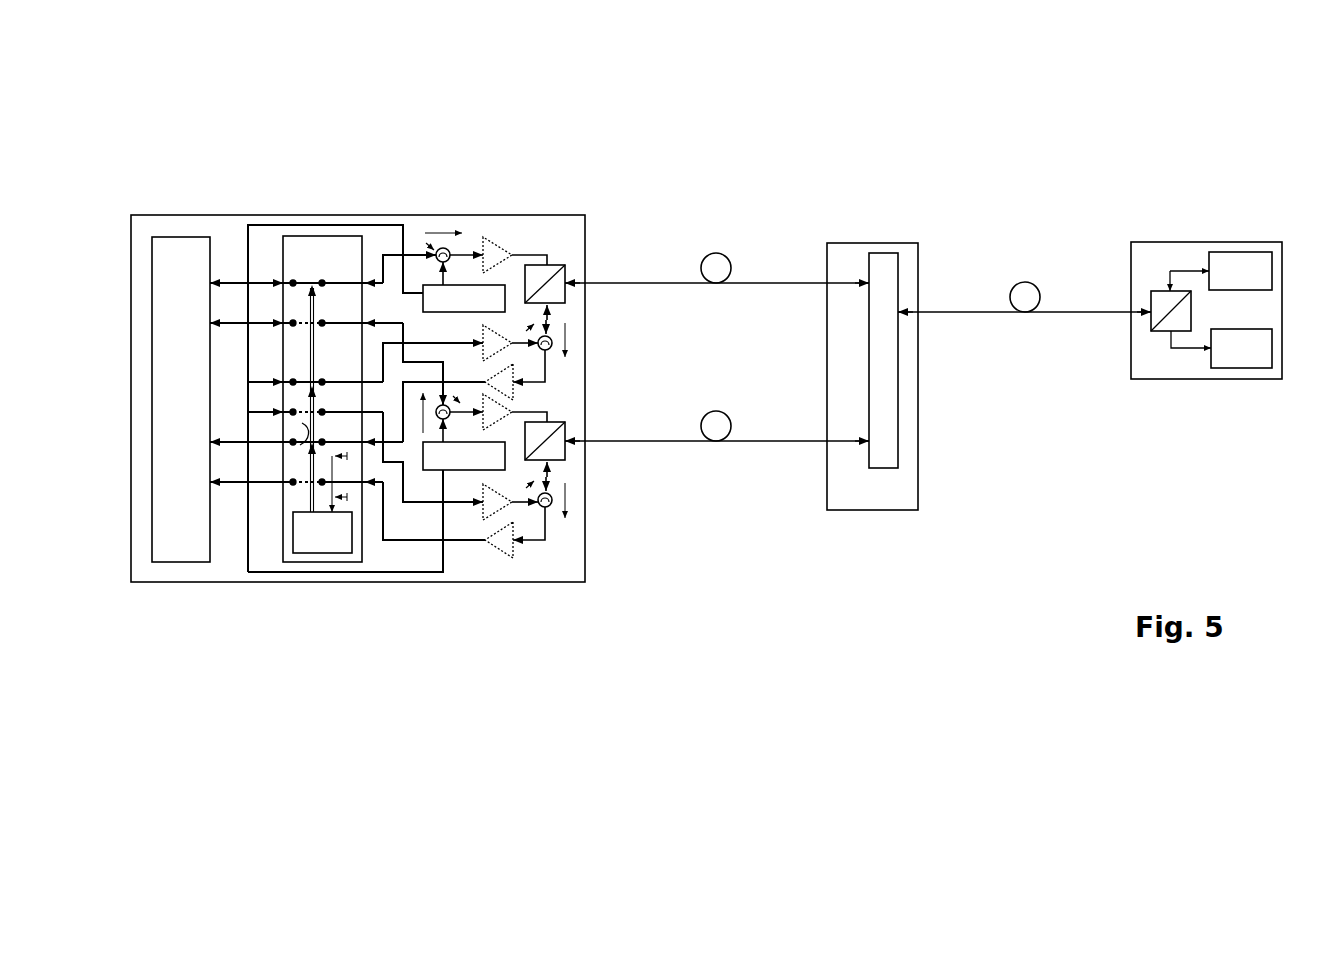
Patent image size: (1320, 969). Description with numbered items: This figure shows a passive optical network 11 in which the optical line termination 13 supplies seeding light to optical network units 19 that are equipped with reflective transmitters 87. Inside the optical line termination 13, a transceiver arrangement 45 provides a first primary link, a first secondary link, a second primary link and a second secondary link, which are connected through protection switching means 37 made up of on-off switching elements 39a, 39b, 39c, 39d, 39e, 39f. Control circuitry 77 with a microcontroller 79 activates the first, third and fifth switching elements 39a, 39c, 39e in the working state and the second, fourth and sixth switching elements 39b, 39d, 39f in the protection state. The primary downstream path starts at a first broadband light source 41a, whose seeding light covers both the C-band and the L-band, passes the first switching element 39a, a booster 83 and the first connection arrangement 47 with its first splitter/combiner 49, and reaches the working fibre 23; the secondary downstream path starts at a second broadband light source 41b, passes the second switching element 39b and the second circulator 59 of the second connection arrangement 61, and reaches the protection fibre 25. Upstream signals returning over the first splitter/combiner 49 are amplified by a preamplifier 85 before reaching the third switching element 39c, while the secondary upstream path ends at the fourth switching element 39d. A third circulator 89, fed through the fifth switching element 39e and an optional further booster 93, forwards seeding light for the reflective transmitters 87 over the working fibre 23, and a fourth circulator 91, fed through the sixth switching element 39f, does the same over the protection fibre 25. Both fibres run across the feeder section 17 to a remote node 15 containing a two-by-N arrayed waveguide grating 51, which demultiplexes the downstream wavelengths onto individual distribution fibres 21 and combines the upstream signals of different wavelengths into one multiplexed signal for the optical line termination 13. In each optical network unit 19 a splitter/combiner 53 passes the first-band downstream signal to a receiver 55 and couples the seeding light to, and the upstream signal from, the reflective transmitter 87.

The passive optical network 11 is at (176, 81).
The optical line termination 13 is at (210, 214).
The remote node (RN) 15 is at (887, 505).
The feeder optical link 17 is at (745, 186).
The optical network unit 19 is at (1148, 252).
The distribution fibre 21 is at (963, 310).
The working fibre 23 is at (740, 283).
The protection fibre 25 is at (740, 441).
The protection switching means 37 is at (323, 230).
The first switching element 39a is at (323, 283).
The second switching element 39b is at (323, 323).
The third switching element 39c is at (324, 445).
The fourth switching element 39d is at (293, 483).
The fifth switching element 39e is at (320, 381).
The sixth switching element 39f is at (290, 443).
The first broadband light source 41a is at (462, 285).
The second broadband light source 41b is at (433, 470).
The transceiver arrangement 45 is at (177, 237).
The first connection arrangement 47 is at (605, 198).
The first splitter/combiner 49 is at (563, 270).
The arrayed waveguide grating 51 is at (887, 444).
The splitter/combiner 53 is at (1152, 318).
The receiver 55 is at (1226, 362).
The second circulator 59 is at (563, 428).
The second connection arrangement 61 is at (598, 398).
The control circuitry 77 is at (308, 590).
The microcontroller 79 is at (340, 545).
The booster 83 is at (493, 248).
The preamplifier 85 is at (514, 390).
The reflective transmitter 87 is at (1245, 258).
The third circulator 89 is at (567, 332).
The fourth circulator 91 is at (567, 492).
The further booster 93 is at (480, 623).